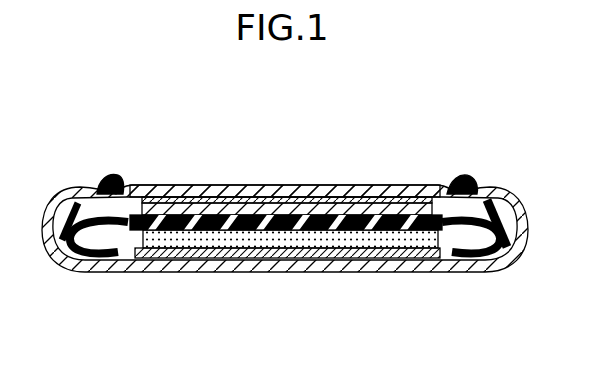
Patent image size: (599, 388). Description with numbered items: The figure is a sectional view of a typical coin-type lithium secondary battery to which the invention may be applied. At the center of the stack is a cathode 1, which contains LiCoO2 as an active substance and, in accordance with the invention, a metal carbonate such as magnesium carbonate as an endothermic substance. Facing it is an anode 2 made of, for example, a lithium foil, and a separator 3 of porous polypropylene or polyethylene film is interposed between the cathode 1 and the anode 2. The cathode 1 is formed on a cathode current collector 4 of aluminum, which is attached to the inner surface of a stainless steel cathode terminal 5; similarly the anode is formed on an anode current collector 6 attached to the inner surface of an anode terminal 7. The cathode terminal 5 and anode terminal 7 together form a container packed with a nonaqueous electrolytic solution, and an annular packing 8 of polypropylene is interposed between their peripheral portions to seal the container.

The cathode 1 is at (332, 214).
The anode 2 is at (329, 212).
The separator 3 is at (257, 238).
The cathode current collector 4 is at (194, 258).
The cathode terminal 5 is at (399, 271).
The anode current collector 6 is at (388, 200).
The anode terminal 7 is at (265, 192).
The annular packing 8 is at (110, 176).